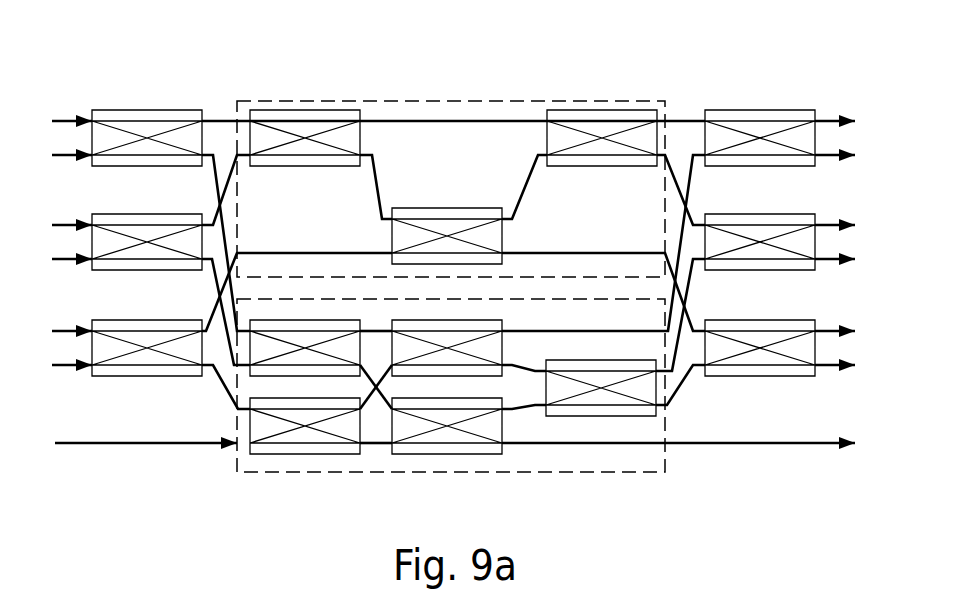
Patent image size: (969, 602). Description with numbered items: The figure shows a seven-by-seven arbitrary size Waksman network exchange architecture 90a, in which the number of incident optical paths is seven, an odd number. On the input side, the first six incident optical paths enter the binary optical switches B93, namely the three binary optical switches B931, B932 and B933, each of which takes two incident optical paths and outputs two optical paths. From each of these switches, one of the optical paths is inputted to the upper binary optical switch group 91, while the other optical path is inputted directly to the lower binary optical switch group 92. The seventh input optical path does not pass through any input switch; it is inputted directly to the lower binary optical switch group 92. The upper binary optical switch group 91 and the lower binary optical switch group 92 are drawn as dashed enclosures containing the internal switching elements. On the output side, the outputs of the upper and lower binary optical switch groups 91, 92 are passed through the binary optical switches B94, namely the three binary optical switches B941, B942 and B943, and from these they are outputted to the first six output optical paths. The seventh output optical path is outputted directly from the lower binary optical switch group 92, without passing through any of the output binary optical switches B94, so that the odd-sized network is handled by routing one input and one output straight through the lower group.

The 7×7 arbitrary size Waksman network exchange architecture 90a is at (795, 32).
The upper binary optical switch group 91 is at (589, 99).
The lower binary optical switch group 92 is at (312, 473).
The binary optical switches B93 is at (147, 248).
The binary optical switch B931 is at (134, 110).
The binary optical switch B932 is at (134, 214).
The binary optical switch B933 is at (122, 377).
The binary optical switches B94 is at (760, 246).
The binary optical switch B941 is at (768, 109).
The binary optical switch B942 is at (767, 214).
The binary optical switch B943 is at (765, 377).